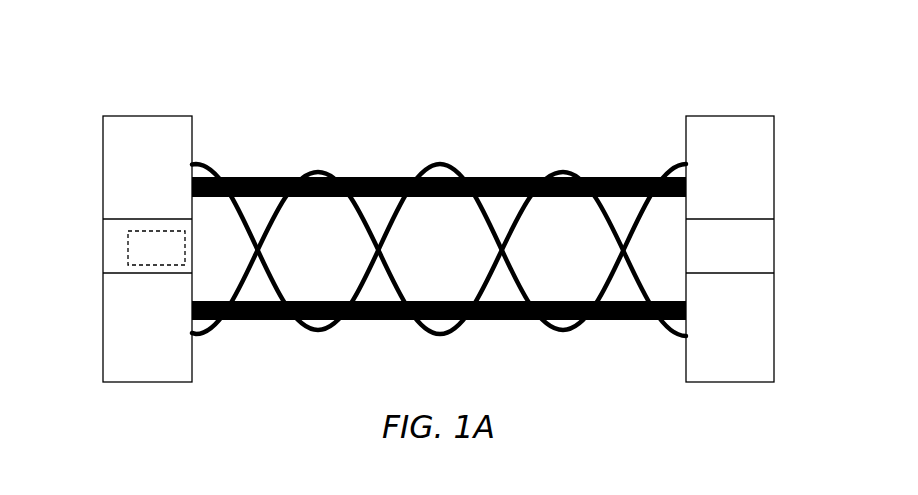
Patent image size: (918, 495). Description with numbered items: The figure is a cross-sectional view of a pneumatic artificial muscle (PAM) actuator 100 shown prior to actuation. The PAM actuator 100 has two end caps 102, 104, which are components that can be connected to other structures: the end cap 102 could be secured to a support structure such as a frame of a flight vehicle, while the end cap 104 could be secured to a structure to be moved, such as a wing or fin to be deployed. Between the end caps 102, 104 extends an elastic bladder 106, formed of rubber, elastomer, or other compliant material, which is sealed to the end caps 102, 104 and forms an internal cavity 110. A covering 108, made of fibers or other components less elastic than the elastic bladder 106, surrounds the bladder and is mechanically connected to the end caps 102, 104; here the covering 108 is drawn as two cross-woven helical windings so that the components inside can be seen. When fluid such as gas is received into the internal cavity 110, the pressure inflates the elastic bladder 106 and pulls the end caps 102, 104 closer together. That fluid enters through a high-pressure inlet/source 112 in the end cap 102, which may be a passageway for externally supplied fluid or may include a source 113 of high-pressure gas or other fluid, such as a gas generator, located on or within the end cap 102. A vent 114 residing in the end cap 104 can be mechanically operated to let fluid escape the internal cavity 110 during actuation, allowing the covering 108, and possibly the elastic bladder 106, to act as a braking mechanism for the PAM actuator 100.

The pneumatic artificial muscle (PAM) actuator 100 is at (155, 82).
The end cap 102 is at (147, 382).
The end cap 104 is at (732, 382).
The elastic bladder 106 is at (253, 177).
The covering 108 is at (447, 163).
The internal cavity 110 is at (456, 252).
The high-pressure inlet/source 112 is at (103, 245).
The source of high-pressure gas or other fluid 113 is at (156, 248).
The vent 114 is at (774, 247).